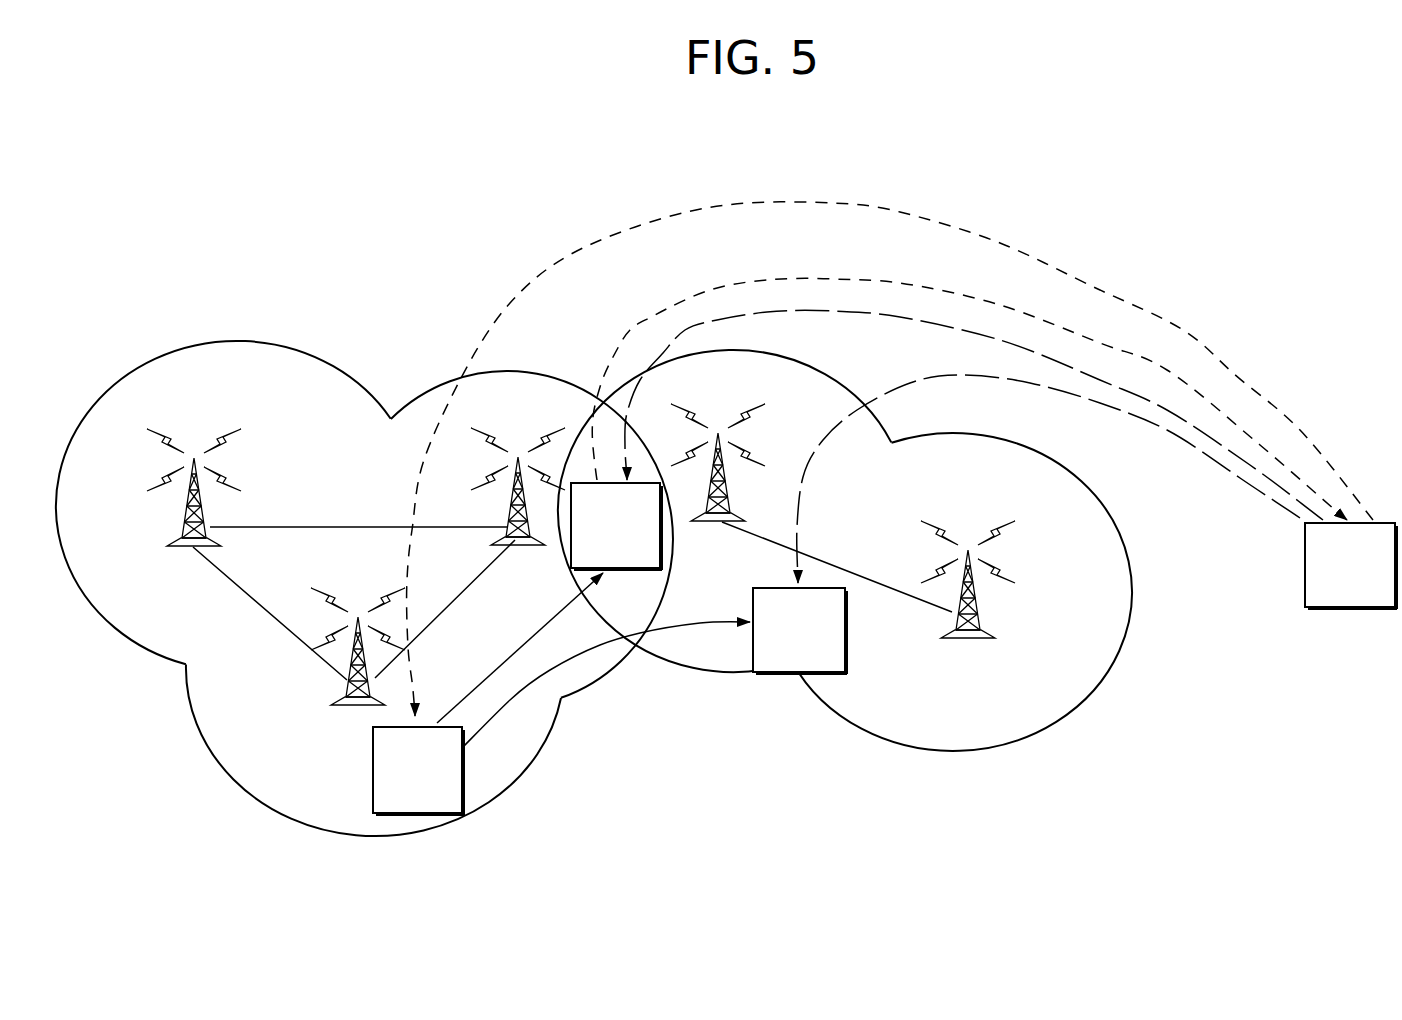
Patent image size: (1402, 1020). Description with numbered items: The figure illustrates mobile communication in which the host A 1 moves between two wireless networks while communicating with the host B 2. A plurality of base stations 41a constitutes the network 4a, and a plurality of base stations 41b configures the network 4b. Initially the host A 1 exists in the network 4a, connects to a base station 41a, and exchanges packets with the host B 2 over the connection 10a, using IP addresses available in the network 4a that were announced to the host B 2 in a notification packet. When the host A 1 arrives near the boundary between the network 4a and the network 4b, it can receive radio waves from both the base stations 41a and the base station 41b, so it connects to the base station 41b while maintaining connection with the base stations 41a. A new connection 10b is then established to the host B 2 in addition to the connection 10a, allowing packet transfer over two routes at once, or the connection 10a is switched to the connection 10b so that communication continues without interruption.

The host A 1 is at (628, 570).
The host B 2 is at (1350, 612).
The network 4a is at (337, 832).
The network 4b is at (945, 757).
The connection 10a is at (745, 200).
The connection 10b is at (777, 313).
The base station 41a is at (185, 505).
The base station 41b is at (703, 523).